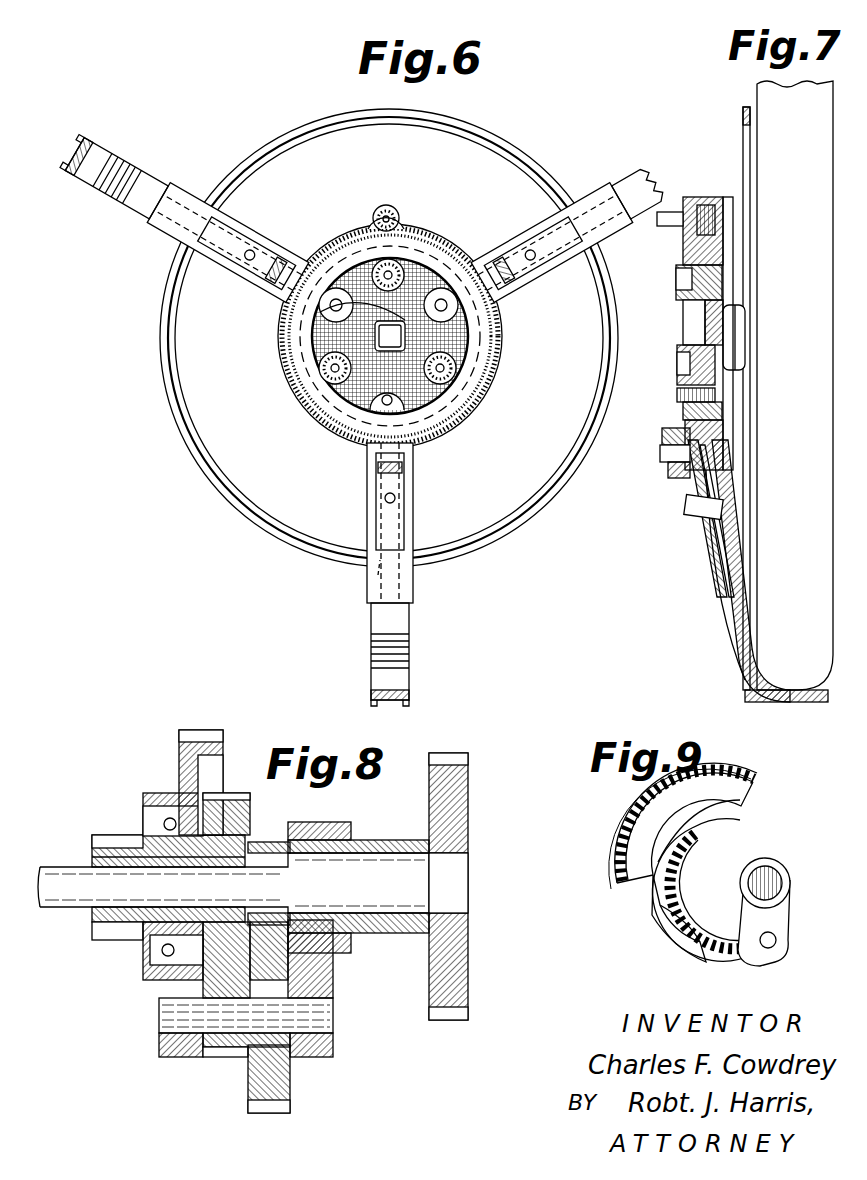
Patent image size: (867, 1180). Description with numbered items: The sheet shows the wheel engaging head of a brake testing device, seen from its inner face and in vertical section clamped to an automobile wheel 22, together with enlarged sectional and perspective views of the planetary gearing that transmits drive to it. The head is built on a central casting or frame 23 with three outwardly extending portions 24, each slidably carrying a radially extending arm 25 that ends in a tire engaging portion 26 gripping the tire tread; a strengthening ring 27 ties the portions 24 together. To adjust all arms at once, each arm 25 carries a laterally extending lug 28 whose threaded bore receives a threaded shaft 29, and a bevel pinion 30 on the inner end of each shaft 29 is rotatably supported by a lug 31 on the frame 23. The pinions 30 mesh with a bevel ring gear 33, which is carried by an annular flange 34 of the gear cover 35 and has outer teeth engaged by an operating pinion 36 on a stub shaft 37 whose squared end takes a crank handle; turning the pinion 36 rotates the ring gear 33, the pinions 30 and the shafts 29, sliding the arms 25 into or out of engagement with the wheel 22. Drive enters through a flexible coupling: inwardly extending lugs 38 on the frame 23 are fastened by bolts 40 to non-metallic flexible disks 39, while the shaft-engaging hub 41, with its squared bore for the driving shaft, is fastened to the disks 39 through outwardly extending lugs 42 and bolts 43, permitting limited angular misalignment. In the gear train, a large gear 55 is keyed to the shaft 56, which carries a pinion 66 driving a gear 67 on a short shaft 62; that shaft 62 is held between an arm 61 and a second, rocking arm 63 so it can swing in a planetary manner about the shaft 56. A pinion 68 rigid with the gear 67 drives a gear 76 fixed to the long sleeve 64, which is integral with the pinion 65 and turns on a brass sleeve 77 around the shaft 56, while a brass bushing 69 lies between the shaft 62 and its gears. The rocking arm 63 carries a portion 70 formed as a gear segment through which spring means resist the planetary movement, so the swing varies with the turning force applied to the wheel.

In FIG. 7, the automobile wheel 22 is at (785, 628).
In FIG. 6, the central casting or frame 23 is at (298, 380).
In FIG. 7, the central casting or frame 23 is at (723, 430).
In FIG. 6, the outwardly extending portions 24 is at (258, 232).
In FIG. 6, the radially extending arm 25 is at (410, 616).
In FIG. 7, the radially extending arm 25 is at (743, 612).
In FIG. 6, the tire engaging portion 26 is at (95, 140).
In FIG. 7, the tire engaging portion 26 is at (803, 702).
In FIG. 6, the strengthening ring 27 is at (218, 486).
In FIG. 7, the strengthening ring 27 is at (743, 125).
In FIG. 7, the laterally extending lug 28 is at (685, 512).
In FIG. 6, the threaded shaft 29 is at (378, 575).
In FIG. 7, the threaded shaft 29 is at (712, 540).
In FIG. 6, the bevel pinion 30 is at (348, 436).
In FIG. 7, the bevel pinion 30 is at (660, 454).
In FIG. 7, the lug 31 is at (672, 475).
In FIG. 6, the bevel ring gear 33 is at (441, 238).
In FIG. 7, the bevel ring gear 33 is at (716, 438).
In FIG. 7, the annular flange 34 is at (683, 413).
In FIG. 7, the gear cover 35 is at (662, 438).
In FIG. 6, the operating pinion 36 is at (382, 206).
In FIG. 7, the operating pinion 36 is at (700, 200).
In FIG. 6, the stub shaft 37 is at (388, 218).
In FIG. 7, the stub shaft 37 is at (722, 213).
In FIG. 6, the inwardly extending lugs 38 is at (430, 393).
In FIG. 7, the inwardly extending lugs 38 is at (740, 380).
In FIG. 6, the flexible disk 39 is at (455, 312).
In FIG. 7, the flexible disk 39 is at (720, 285).
In FIG. 6, the bolts 40 is at (395, 403).
In FIG. 7, the bolts 40 is at (677, 396).
In FIG. 6, the shaft-engaging hub 41 is at (405, 340).
In FIG. 7, the shaft-engaging hub 41 is at (686, 331).
In FIG. 6, the outwardly extending lugs 42 is at (312, 336).
In FIG. 7, the outwardly extending lugs 42 is at (677, 372).
In FIG. 6, the bolts 43 is at (320, 368).
In FIG. 7, the bolts 43 is at (677, 362).
In FIG. 8, the large gear 55 is at (470, 803).
In FIG. 8, the shaft 56 is at (74, 902).
In FIG. 9, the shaft 56 is at (772, 878).
In FIG. 8, the arm 61 is at (333, 972).
In FIG. 9, the arm 61 is at (776, 916).
In FIG. 8, the short shaft 62 is at (335, 1016).
In FIG. 9, the short shaft 62 is at (777, 938).
In FIG. 8, the second arm 63 is at (159, 1047).
In FIG. 9, the second arm 63 is at (658, 912).
In FIG. 8, the long sleeve 64 is at (183, 830).
In FIG. 8, the pinion 65 is at (108, 845).
In FIG. 9, the pinion 65 is at (640, 828).
In FIG. 8, the pinion 66 is at (270, 845).
In FIG. 8, the gear 67 is at (290, 1087).
In FIG. 8, the pinion 68 is at (245, 1058).
In FIG. 9, the pinion 68 is at (688, 928).
In FIG. 8, the brass bushing 69 is at (228, 1048).
In FIG. 8, the gear segment portion 70 is at (215, 746).
In FIG. 9, the gear segment portion 70 is at (742, 790).
In FIG. 8, the gear 76 is at (246, 818).
In FIG. 9, the gear 76 is at (735, 835).
In FIG. 8, the brass sleeve 77 is at (172, 856).